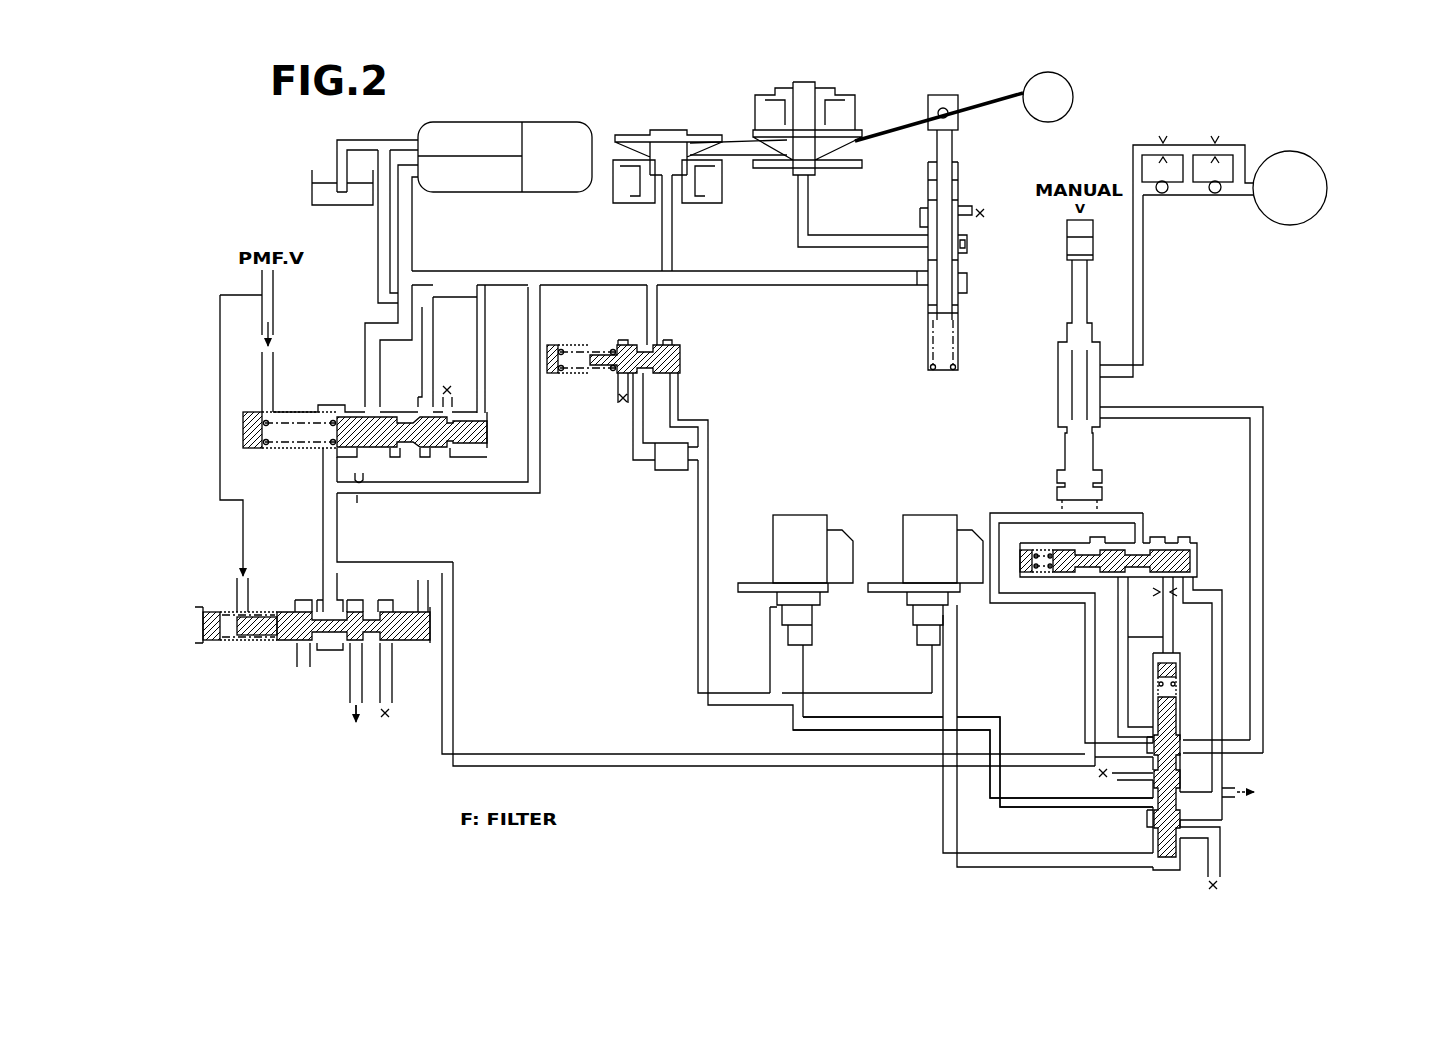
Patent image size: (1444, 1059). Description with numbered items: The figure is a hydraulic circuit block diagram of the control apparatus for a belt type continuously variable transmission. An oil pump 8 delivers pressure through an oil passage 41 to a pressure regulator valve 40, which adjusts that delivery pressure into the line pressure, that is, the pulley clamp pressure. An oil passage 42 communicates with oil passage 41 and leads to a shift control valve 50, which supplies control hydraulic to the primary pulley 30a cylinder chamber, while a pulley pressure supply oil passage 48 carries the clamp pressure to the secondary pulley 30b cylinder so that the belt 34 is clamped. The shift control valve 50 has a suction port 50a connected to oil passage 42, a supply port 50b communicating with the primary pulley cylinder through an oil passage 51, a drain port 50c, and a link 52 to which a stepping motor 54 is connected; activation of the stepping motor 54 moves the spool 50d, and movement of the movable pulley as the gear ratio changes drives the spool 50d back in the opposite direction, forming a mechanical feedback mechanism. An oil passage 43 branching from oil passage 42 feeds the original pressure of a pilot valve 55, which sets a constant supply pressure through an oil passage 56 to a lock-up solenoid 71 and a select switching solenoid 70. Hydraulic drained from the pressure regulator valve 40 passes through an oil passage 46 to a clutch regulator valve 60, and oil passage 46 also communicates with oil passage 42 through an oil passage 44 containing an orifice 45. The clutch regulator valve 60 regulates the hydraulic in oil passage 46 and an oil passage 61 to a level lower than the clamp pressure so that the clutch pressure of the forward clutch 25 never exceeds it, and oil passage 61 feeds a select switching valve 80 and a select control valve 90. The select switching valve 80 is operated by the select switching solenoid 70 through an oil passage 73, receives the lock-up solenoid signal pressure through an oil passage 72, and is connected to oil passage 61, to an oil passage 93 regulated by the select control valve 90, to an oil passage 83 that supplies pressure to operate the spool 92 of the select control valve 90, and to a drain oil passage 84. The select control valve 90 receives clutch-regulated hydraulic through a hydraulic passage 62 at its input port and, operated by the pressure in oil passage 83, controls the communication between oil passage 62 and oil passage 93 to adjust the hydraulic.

The oil pump 8 is at (587, 122).
The forward clutch 25 is at (1293, 228).
The primary pulley 30a is at (838, 80).
The secondary pulley 30b is at (669, 120).
The belt 34 is at (732, 160).
The pressure regulator valve 40 is at (466, 452).
The oil passage 41 is at (415, 225).
The oil passage 42 is at (512, 272).
The oil passage 43 is at (660, 322).
The oil passage 44 is at (540, 442).
The orifice 45 is at (362, 499).
The oil passage 46 is at (321, 518).
The pulley pressure supply oil passage 48 is at (660, 248).
The shift control valve 50 is at (964, 154).
The suction port 50a is at (922, 288).
The supply port 50b is at (920, 234).
The drain port 50c is at (968, 207).
The spool 50d is at (968, 250).
The oil passage 51 is at (796, 230).
The link 52 is at (995, 99).
The stepping motor 54 is at (1073, 83).
The pilot valve 55 is at (686, 356).
The oil passage 56 is at (710, 460).
The clutch regulator valve 60 is at (297, 676).
The oil passage 61 is at (453, 623).
The hydraulic passage 62 is at (1048, 607).
The select switching solenoid 70 is at (922, 508).
The lock-up solenoid 71 is at (802, 508).
The oil passage 72 is at (857, 732).
The oil passage 73 is at (943, 823).
The select switching valve 80 is at (1146, 817).
The oil passage 83 is at (1222, 810).
The drain oil passage 84 is at (1220, 850).
The select control valve 90 is at (1172, 516).
The spool 92 is at (1102, 547).
The oil passage 93 is at (1116, 680).